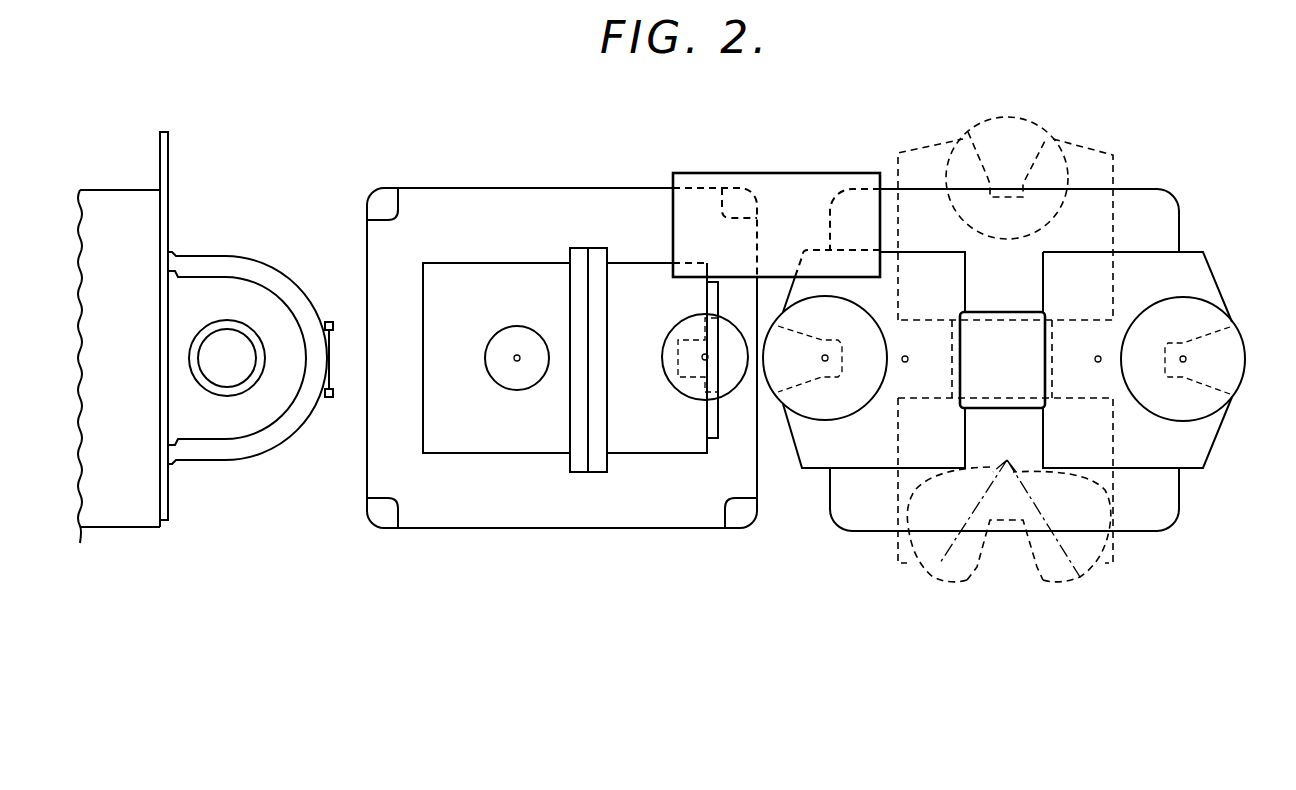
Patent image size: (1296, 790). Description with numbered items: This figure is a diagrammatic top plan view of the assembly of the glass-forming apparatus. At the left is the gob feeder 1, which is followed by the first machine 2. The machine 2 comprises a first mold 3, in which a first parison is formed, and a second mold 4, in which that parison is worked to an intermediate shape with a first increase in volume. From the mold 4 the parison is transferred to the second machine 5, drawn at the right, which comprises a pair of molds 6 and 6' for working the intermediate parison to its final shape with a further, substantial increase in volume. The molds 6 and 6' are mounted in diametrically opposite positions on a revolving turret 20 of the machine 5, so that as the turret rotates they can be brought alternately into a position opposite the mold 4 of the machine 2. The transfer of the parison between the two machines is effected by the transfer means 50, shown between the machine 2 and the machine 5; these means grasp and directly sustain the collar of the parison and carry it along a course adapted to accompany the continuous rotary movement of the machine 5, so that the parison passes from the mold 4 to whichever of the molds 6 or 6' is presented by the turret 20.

The gob feeder 1 is at (263, 420).
The machine 2 is at (513, 515).
The first mold 3 is at (505, 373).
The second mold 4 is at (685, 378).
The machine 5 is at (853, 515).
The mold 6 is at (825, 377).
The mold 6' is at (1201, 359).
The revolving turret 20 is at (928, 265).
The transfer means 50 is at (800, 237).